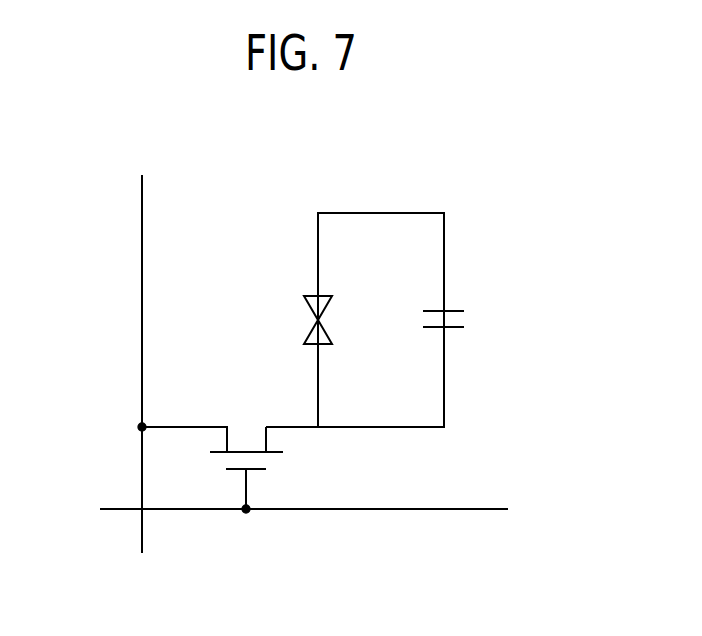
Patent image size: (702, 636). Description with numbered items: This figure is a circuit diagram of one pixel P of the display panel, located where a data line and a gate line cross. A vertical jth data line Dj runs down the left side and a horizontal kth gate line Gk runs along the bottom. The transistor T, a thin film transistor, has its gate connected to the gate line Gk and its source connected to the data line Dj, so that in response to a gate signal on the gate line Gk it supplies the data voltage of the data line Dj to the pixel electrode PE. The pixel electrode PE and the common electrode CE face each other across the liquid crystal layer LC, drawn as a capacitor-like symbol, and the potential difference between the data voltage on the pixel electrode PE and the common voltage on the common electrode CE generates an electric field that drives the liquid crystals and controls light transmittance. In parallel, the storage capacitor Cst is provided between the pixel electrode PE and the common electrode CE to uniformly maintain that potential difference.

The jth data line Dj is at (141, 219).
The kth gate line Gk is at (381, 510).
The pixel P is at (459, 185).
The transistor T is at (219, 468).
The liquid crystal layer LC is at (308, 320).
The common electrode CE is at (312, 296).
The pixel electrode PE is at (311, 345).
The storage capacitor Cst is at (460, 320).